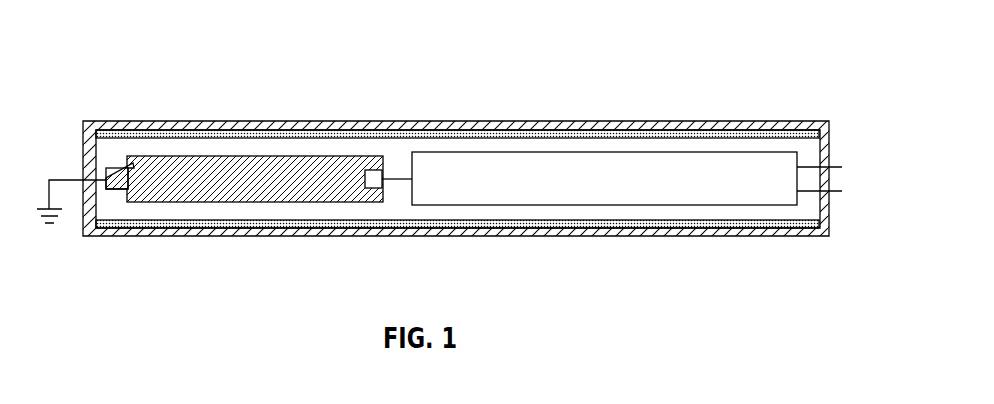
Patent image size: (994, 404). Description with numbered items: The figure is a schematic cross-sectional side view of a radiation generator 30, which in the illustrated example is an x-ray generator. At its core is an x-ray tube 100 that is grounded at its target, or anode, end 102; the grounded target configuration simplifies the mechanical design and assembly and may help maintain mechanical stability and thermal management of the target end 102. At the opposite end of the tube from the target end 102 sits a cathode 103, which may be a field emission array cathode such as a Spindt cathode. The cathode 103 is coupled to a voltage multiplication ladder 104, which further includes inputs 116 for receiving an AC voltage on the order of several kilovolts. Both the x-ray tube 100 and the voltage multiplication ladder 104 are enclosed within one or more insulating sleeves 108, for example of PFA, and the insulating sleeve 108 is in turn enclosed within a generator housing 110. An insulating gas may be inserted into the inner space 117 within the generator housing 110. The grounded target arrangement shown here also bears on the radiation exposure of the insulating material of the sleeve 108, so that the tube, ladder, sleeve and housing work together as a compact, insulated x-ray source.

The radiation generator 30 is at (118, 44).
The generator housing 110 is at (138, 122).
The inner space 117 is at (431, 143).
The x-ray tube 100 is at (250, 203).
The target end 102 is at (104, 174).
The cathode 103 is at (372, 203).
The voltage multiplication ladder 104 is at (640, 205).
The inputs 116 is at (806, 167).
The insulating sleeve 108 is at (516, 230).